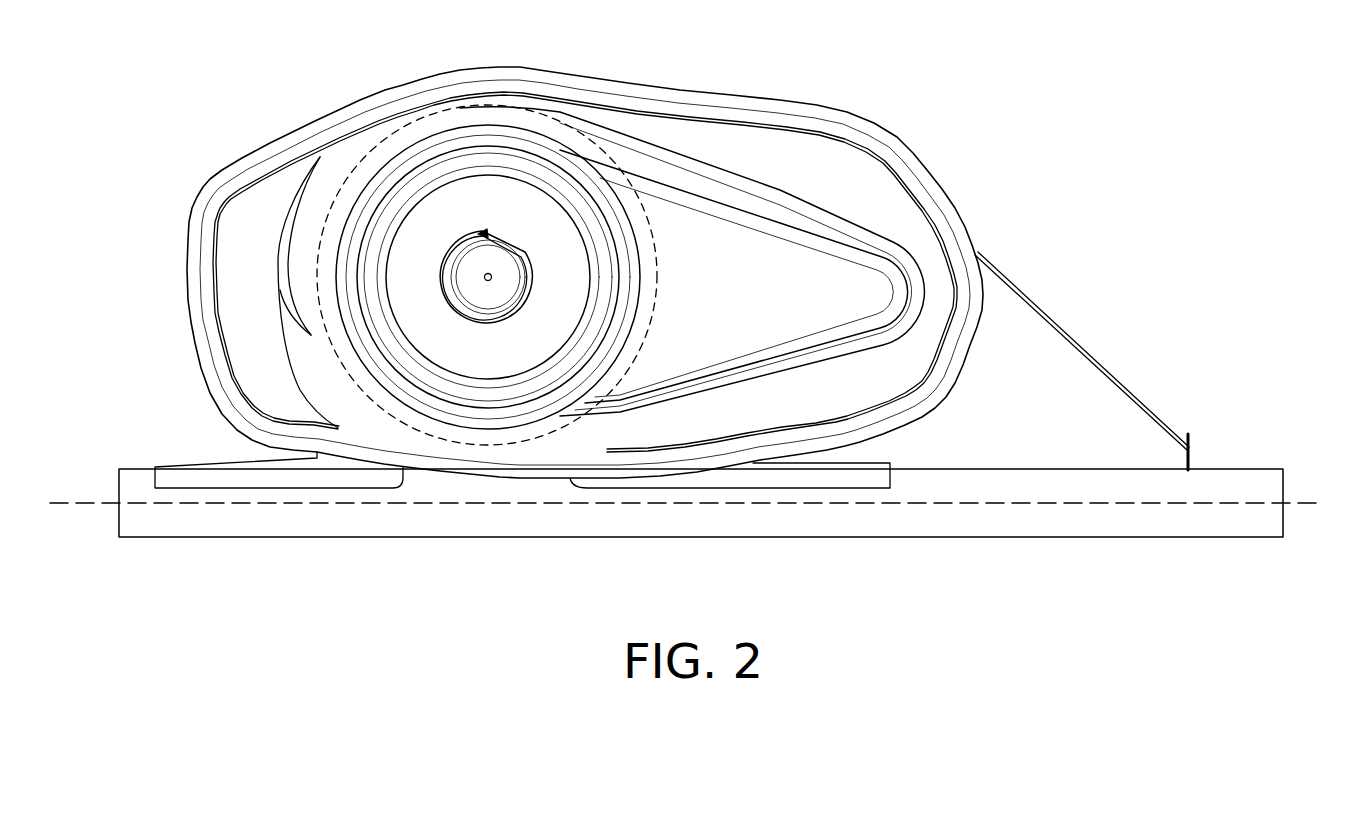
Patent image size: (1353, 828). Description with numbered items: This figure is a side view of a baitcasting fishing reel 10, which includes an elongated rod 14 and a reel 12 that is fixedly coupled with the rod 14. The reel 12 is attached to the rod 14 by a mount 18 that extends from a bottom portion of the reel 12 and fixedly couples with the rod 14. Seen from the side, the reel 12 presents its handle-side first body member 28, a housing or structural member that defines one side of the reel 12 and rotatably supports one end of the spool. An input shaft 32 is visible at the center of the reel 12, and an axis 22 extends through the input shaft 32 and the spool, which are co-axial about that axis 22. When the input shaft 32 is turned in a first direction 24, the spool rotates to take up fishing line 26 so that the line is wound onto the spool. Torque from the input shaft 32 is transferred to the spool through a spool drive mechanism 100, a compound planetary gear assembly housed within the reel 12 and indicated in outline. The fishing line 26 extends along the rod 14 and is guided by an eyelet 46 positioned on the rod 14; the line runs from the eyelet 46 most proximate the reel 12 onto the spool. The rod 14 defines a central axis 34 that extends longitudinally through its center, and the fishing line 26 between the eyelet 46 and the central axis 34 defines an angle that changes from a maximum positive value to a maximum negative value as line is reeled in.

The fishing reel 10 is at (123, 95).
The reel 12 is at (241, 94).
The rod 14 is at (730, 538).
The mount 18 is at (178, 483).
The axis 22 is at (490, 272).
The direction 24 is at (446, 282).
The fishing line 26 is at (1097, 358).
The first body member 28 is at (836, 120).
The input shaft 32 is at (497, 318).
The central axis 34 is at (1310, 503).
The eyelet 46 is at (1195, 455).
The spool drive mechanism 100 is at (661, 280).